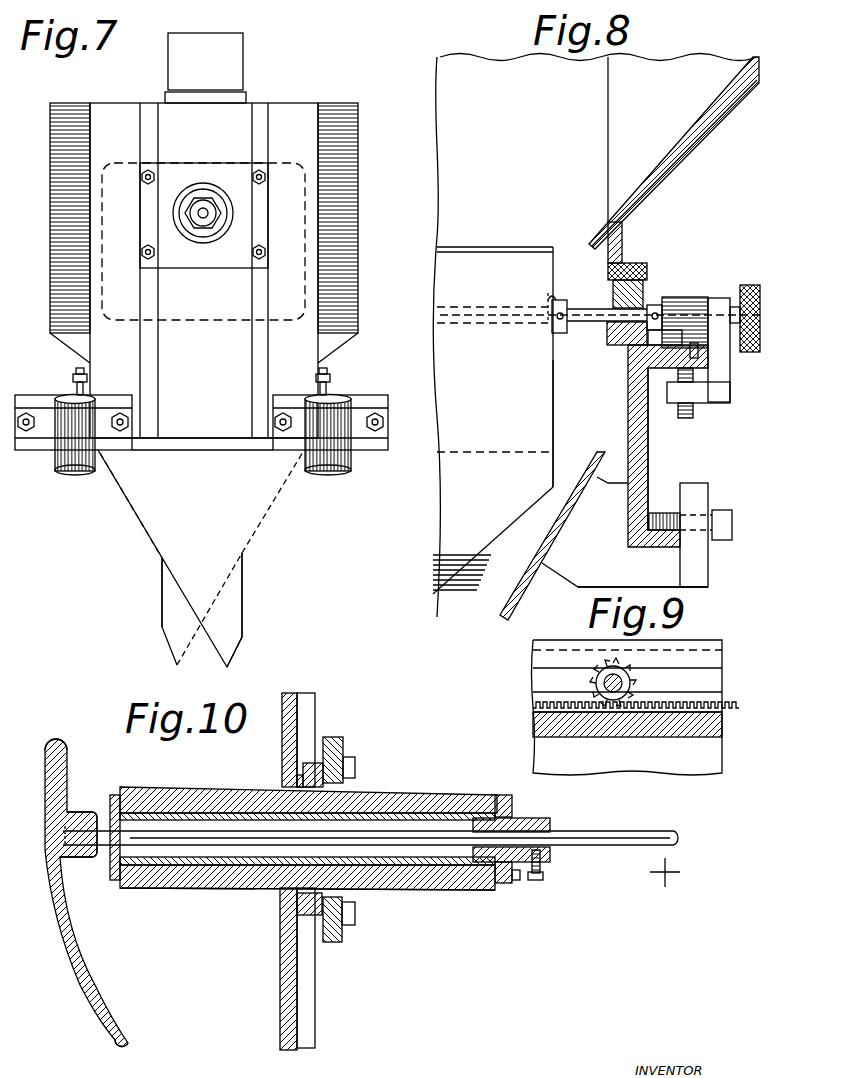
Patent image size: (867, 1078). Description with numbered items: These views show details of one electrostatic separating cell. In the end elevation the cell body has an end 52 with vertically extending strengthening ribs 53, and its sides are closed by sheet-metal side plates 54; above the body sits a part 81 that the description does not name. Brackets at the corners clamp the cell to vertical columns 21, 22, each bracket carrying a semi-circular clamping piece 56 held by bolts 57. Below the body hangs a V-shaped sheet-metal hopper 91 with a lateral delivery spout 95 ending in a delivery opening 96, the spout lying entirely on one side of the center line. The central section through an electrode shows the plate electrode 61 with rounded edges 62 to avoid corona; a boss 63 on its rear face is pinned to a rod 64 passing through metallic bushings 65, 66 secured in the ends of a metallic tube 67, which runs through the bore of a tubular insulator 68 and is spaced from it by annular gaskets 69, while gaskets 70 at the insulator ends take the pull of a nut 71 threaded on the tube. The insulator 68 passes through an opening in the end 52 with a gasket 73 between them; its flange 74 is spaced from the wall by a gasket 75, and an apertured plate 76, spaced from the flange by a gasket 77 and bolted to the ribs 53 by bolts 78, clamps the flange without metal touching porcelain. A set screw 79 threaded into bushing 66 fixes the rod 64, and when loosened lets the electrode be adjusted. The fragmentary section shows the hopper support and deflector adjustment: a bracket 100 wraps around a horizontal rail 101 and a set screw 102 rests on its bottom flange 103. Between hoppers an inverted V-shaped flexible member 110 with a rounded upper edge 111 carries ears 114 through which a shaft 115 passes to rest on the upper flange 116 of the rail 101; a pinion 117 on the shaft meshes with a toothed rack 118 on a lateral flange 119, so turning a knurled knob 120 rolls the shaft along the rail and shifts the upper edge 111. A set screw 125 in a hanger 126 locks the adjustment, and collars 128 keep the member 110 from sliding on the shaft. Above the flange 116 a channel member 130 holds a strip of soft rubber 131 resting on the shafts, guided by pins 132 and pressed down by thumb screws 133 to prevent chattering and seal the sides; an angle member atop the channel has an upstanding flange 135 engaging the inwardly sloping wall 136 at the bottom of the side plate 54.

In FIG. 7, the column 21 is at (68, 457).
In FIG. 7, the column 22 is at (345, 470).
In FIG. 7, the end 52 is at (204, 270).
In FIG. 10, the end 52 is at (280, 963).
In FIG. 7, the strengthening rib 53 is at (252, 125).
In FIG. 10, the strengthening rib 53 is at (315, 1027).
In FIG. 7, the side plate 54 is at (357, 247).
In FIG. 8, the side plate 54 is at (752, 66).
In FIG. 7, the clamping piece 56 is at (380, 410).
In FIG. 7, the bolt 57 is at (384, 422).
In FIG. 7, the electrode 61 is at (222, 322).
In FIG. 10, the electrode 61 is at (70, 940).
In FIG. 10, the rounded edge 62 is at (64, 740).
In FIG. 10, the boss 63 is at (66, 830).
In FIG. 7, the rod 64 is at (196, 208).
In FIG. 10, the rod 64 is at (106, 845).
In FIG. 10, the metallic bushing 65 is at (107, 797).
In FIG. 10, the metallic bushing 66 is at (535, 818).
In FIG. 10, the metallic tube 67 is at (432, 870).
In FIG. 10, the tubular insulator 68 is at (410, 790).
In FIG. 10, the annular gasket 69 is at (140, 797).
In FIG. 10, the gasket 70 is at (115, 888).
In FIG. 10, the nut 71 is at (515, 882).
In FIG. 10, the gasket 73 is at (290, 780).
In FIG. 10, the flange 74 is at (330, 750).
In FIG. 10, the gasket 75 is at (308, 762).
In FIG. 7, the apertured plate 76 is at (204, 215).
In FIG. 10, the apertured plate 76 is at (350, 757).
In FIG. 10, the gasket 77 is at (322, 937).
In FIG. 7, the bolt 78 is at (262, 182).
In FIG. 10, the bolt 78 is at (358, 765).
In FIG. 10, the set screw 79 is at (545, 864).
In FIG. 7, the motor housing 81 is at (240, 64).
In FIG. 7, the hopper 91 is at (200, 558).
In FIG. 8, the hopper 91 is at (555, 583).
In FIG. 7, the delivery spout 95 is at (168, 601).
In FIG. 7, the delivery opening 96 is at (240, 650).
In FIG. 8, the bracket 100 is at (615, 573).
In FIG. 8, the rail 101 is at (628, 422).
In FIG. 9, the rail 101 is at (775, 771).
In FIG. 8, the set screw 102 is at (695, 480).
In FIG. 8, the bottom flange 103 is at (678, 576).
In FIG. 8, the member 110 is at (595, 383).
In FIG. 8, the upper edge 111 is at (520, 235).
In FIG. 8, the ear 114 is at (548, 335).
In FIG. 8, the shaft 115 is at (605, 293).
In FIG. 8, the upper flange 116 is at (606, 338).
In FIG. 8, the pinion 117 is at (700, 278).
In FIG. 9, the pinion 117 is at (690, 690).
In FIG. 8, the toothed rack 118 is at (628, 360).
In FIG. 9, the toothed rack 118 is at (775, 693).
In FIG. 8, the lateral flange 119 is at (700, 362).
In FIG. 9, the lateral flange 119 is at (775, 733).
In FIG. 8, the knurled knob 120 is at (780, 268).
In FIG. 8, the set screw 125 is at (697, 414).
In FIG. 8, the hanger 126 is at (722, 352).
In FIG. 8, the collar 128 is at (545, 293).
In FIG. 7, the channel member 130 is at (333, 375).
In FIG. 8, the channel member 130 is at (652, 275).
In FIG. 9, the channel member 130 is at (775, 653).
In FIG. 8, the strip of soft rubber 131 is at (628, 268).
In FIG. 9, the strip of soft rubber 131 is at (775, 673).
In FIG. 7, the guiding pin 132 is at (333, 390).
In FIG. 7, the thumb screw 133 is at (330, 370).
In FIG. 8, the upstanding flange 135 is at (606, 244).
In FIG. 8, the inwardly sloping wall 136 is at (690, 148).